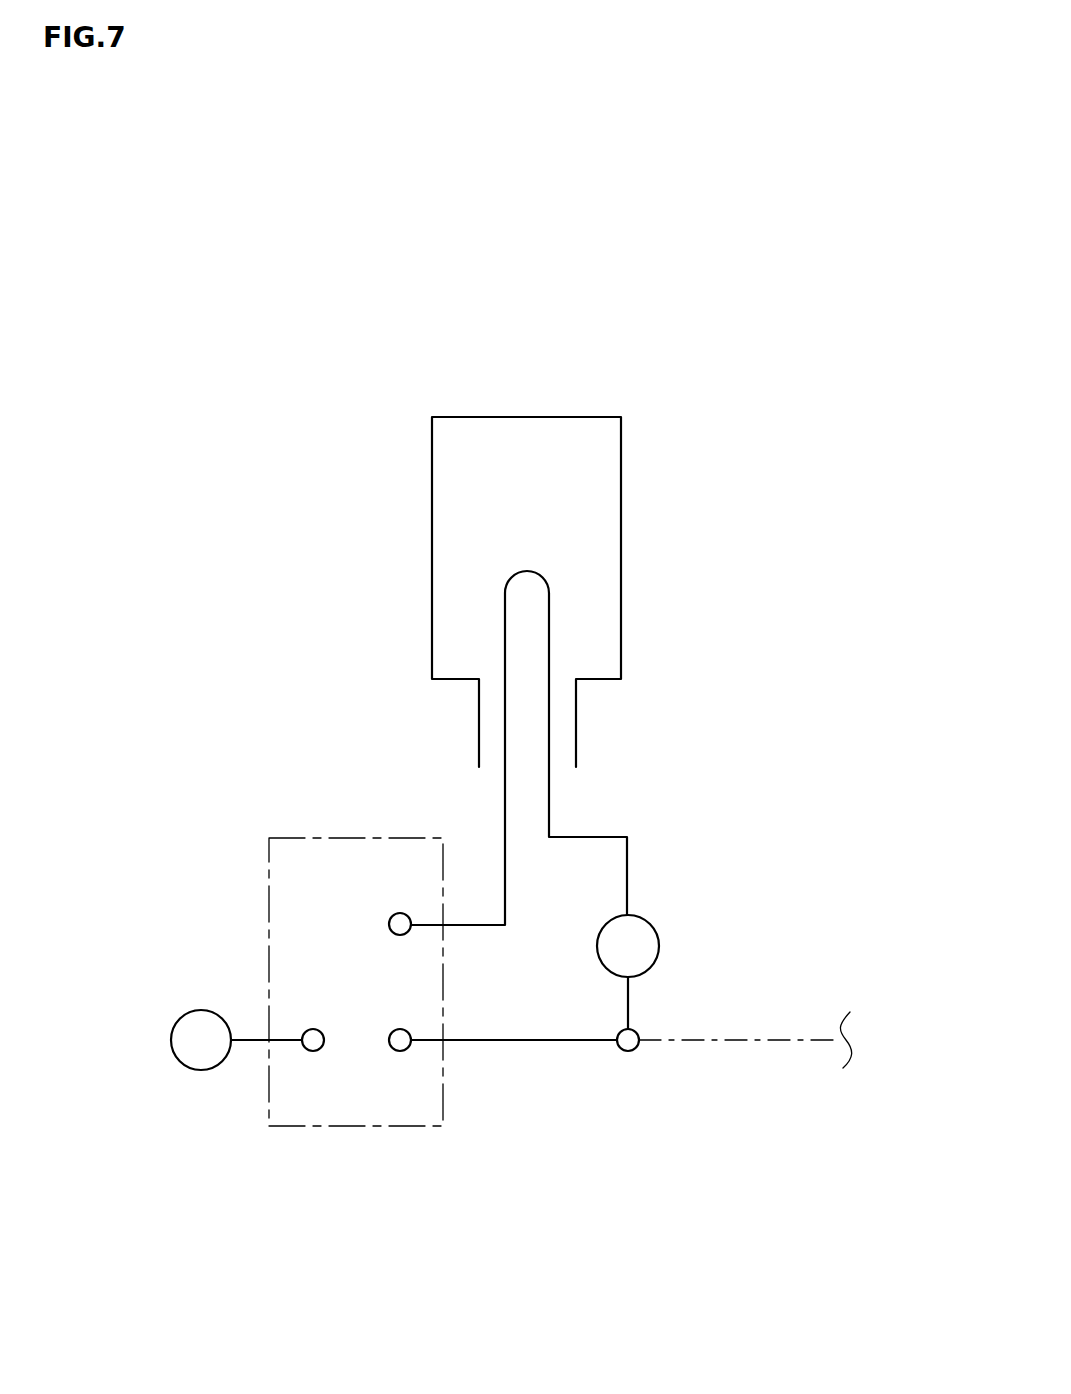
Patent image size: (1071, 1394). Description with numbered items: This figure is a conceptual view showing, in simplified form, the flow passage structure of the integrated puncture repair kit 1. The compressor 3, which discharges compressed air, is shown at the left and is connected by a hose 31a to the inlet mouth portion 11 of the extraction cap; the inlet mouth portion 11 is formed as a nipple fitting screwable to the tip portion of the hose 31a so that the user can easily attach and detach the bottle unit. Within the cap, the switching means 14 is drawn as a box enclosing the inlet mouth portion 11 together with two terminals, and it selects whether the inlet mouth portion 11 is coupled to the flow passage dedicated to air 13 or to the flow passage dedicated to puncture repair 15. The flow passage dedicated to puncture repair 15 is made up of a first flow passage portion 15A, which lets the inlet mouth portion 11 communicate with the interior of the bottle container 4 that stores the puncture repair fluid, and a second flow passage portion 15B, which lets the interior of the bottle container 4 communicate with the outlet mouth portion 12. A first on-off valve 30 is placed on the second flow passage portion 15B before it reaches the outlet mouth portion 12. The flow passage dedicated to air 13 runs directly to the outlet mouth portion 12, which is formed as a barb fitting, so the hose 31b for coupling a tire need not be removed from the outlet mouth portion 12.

The integrated puncture repair kit 1 is at (622, 631).
The bottle container 4 is at (621, 547).
The flow passage dedicated to puncture repair 15 is at (622, 748).
The first flow passage portion 15A is at (507, 798).
The second flow passage portion 15B is at (590, 836).
The first on-off valve 30 is at (652, 926).
The outlet mouth portion 12 is at (620, 1051).
The flow passage dedicated to air 13 is at (495, 1042).
The hose for coupling a tire 31b is at (722, 1042).
The switching means 14 is at (295, 837).
The inlet mouth portion 11 is at (306, 1051).
The hose 31a is at (252, 1033).
The compressor 3 is at (196, 1070).